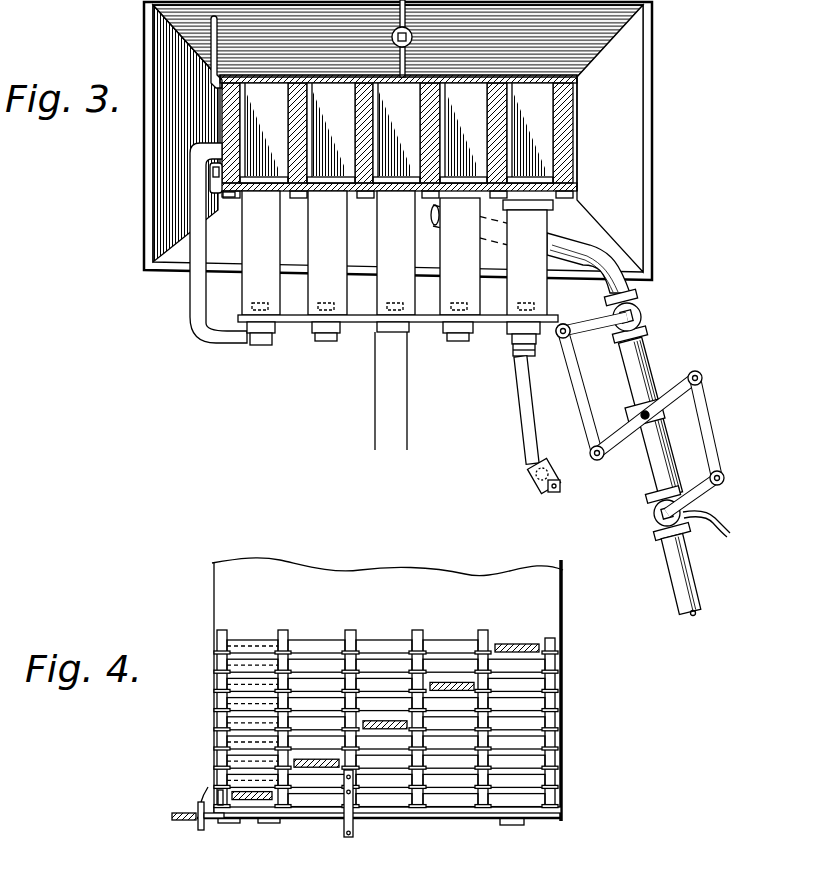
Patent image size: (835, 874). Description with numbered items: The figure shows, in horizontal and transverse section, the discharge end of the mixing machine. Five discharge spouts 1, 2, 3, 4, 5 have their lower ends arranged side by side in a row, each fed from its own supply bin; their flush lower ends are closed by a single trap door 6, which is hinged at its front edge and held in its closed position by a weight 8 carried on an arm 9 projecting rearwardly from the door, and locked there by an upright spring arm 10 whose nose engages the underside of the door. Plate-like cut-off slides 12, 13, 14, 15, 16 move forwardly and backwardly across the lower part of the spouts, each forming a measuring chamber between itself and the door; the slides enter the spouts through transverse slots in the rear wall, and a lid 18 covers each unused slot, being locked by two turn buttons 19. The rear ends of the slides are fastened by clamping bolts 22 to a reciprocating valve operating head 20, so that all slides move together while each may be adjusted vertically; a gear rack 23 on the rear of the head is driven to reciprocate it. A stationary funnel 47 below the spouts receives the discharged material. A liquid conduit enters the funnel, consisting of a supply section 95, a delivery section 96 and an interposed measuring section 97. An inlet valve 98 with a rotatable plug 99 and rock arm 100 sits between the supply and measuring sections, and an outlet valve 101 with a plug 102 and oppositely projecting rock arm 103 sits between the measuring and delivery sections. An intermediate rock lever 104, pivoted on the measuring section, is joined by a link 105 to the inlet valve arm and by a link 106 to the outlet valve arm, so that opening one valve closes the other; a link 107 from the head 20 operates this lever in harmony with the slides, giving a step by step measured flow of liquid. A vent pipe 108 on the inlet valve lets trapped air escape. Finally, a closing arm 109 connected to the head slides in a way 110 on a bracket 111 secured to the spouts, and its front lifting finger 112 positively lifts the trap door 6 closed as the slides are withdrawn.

In FIG. 3, the discharge spout 1 is at (530, 133).
In FIG. 3, the discharge spout 2 is at (463, 133).
In FIG. 3, the discharge spout 3 is at (396, 133).
In FIG. 3, the discharge spout 4 is at (331, 133).
In FIG. 3, the discharge spout 5 is at (264, 133).
In FIG. 4, the trap door 6 is at (440, 816).
In FIG. 3, the weight 8 is at (409, 60).
In FIG. 3, the arm 9 is at (411, 30).
In FIG. 4, the upright spring arm 10 is at (349, 800).
In FIG. 3, the cut-off slide 12 is at (528, 260).
In FIG. 4, the cut-off slide 12 is at (520, 645).
In FIG. 3, the cut-off slide 13 is at (460, 256).
In FIG. 4, the cut-off slide 13 is at (450, 682).
In FIG. 3, the cut-off slide 14 is at (396, 253).
In FIG. 4, the cut-off slide 14 is at (381, 718).
In FIG. 3, the cut-off slide 15 is at (327, 253).
In FIG. 4, the cut-off slide 15 is at (317, 762).
In FIG. 3, the cut-off slide 16 is at (261, 253).
In FIG. 4, the cut-off slide 16 is at (258, 798).
In FIG. 3, the lid 18 is at (563, 183).
In FIG. 4, the lid 18 is at (251, 636).
In FIG. 4, the turn button 19 is at (220, 705).
In FIG. 3, the valve operating head 20 is at (361, 323).
In FIG. 3, the clamping bolt 22 is at (328, 342).
In FIG. 3, the gear rack 23 is at (382, 430).
In FIG. 3, the stationary funnel 47 is at (398, 141).
In FIG. 3, the supply section 95 is at (692, 606).
In FIG. 3, the delivery section 96 is at (566, 242).
In FIG. 3, the measuring section 97 is at (637, 362).
In FIG. 3, the inlet valve 98 is at (655, 516).
In FIG. 3, the rotatable plug 99 is at (662, 519).
In FIG. 3, the rock arm 100 is at (711, 491).
In FIG. 3, the outlet valve 101 is at (642, 321).
In FIG. 3, the rotatable plug 102 is at (634, 312).
In FIG. 3, the rock arm 103 is at (581, 327).
In FIG. 3, the intermediate rock lever 104 is at (681, 380).
In FIG. 3, the link 105 is at (706, 426).
In FIG. 3, the link 106 is at (584, 390).
In FIG. 3, the link 107 is at (541, 430).
In FIG. 3, the vent pipe 108 is at (731, 533).
In FIG. 3, the closing arm 109 is at (200, 297).
In FIG. 4, the closing arm 109 is at (176, 816).
In FIG. 3, the way 110 is at (215, 122).
In FIG. 4, the bracket 111 is at (200, 826).
In FIG. 3, the lifting finger 112 is at (198, 155).
In FIG. 4, the lifting finger 112 is at (233, 821).